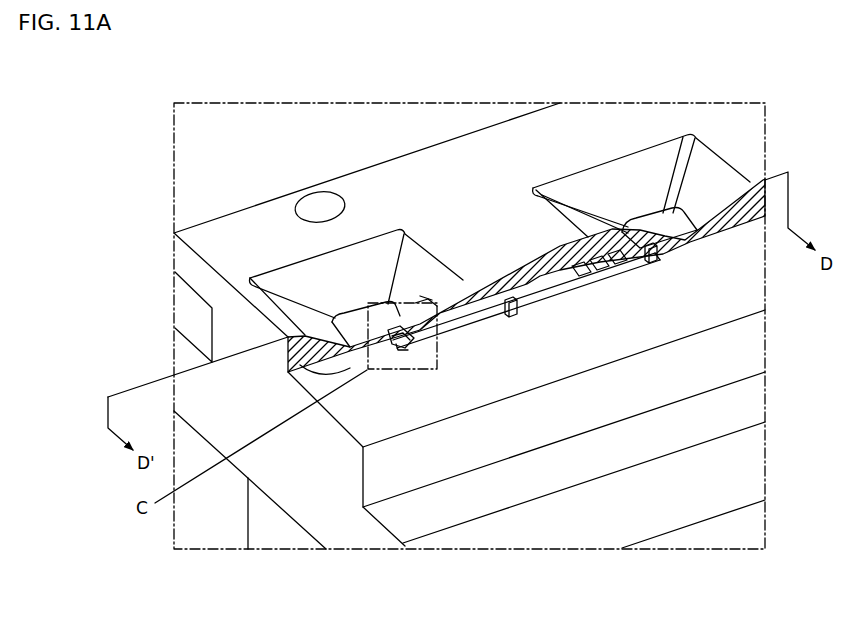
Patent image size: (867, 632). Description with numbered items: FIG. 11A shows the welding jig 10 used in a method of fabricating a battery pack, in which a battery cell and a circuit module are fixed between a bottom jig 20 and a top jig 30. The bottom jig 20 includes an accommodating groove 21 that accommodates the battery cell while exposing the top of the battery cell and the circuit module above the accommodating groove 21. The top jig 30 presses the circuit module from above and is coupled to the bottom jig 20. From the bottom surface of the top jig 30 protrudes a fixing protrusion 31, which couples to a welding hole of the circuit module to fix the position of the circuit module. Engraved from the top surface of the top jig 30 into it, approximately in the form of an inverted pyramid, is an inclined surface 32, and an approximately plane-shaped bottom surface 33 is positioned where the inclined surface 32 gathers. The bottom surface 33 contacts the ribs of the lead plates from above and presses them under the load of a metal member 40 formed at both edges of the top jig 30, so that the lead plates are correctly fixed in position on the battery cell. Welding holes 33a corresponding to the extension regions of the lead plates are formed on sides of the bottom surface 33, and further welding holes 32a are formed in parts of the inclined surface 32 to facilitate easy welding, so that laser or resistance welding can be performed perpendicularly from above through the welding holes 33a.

The welding jig 10 is at (210, 208).
The bottom jig 20 is at (290, 503).
The accommodating groove 21 is at (632, 252).
The top jig 30 is at (348, 183).
The fixing protrusion 31 is at (528, 288).
The inclined surface 32 is at (297, 270).
The welding hole 32a is at (425, 303).
The bottom surface 33 is at (353, 322).
The welding hole 33a is at (398, 323).
The metal member 40 is at (187, 310).